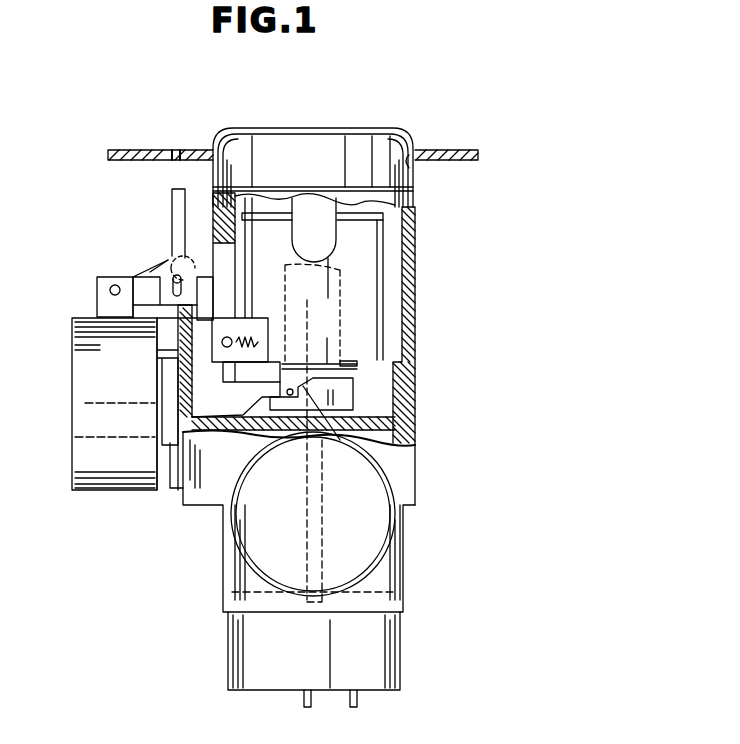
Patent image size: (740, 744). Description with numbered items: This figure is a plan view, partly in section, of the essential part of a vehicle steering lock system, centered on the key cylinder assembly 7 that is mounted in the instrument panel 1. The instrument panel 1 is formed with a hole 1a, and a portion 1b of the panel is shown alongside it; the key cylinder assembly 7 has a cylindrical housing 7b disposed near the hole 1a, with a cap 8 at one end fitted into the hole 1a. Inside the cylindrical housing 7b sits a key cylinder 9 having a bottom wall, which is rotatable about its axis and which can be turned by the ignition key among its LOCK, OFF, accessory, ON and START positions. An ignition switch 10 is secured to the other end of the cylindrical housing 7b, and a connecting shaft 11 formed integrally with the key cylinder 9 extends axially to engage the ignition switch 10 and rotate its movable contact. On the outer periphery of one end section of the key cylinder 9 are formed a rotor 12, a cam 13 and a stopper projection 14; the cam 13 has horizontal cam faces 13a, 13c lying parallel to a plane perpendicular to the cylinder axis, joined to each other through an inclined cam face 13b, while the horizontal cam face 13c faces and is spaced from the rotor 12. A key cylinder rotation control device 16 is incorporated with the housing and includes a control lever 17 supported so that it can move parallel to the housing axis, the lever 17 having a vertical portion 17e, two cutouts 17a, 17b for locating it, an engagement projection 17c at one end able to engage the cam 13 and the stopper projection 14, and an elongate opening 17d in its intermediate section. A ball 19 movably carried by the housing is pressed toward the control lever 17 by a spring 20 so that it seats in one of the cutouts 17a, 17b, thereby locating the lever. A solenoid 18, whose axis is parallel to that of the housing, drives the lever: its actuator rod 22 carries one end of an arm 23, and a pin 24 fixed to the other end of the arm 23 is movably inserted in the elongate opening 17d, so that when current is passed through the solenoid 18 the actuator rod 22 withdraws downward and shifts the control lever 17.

The instrument panel 1 is at (129, 150).
The hole 1a is at (405, 166).
The plate portion 1b is at (177, 150).
The key cylinder assembly 7 is at (424, 310).
The cylindrical housing 7b is at (415, 424).
The cap 8 is at (396, 131).
The key cylinder 9 is at (343, 305).
The ignition switch 10 is at (232, 666).
The connecting shaft 11 is at (322, 517).
The rotor 12 is at (327, 345).
The cam 13 is at (353, 401).
The horizontal cam face 13a is at (292, 396).
The inclined cam face 13b is at (340, 440).
The horizontal cam face 13c is at (357, 368).
The stopper projection 14 is at (282, 368).
The key cylinder rotation control device 16 is at (138, 240).
The control lever 17 is at (200, 340).
The cutout 17a is at (160, 351).
The cutout 17b is at (236, 399).
The engagement projection 17c is at (232, 433).
The elongate opening 17d is at (174, 291).
The armature upright 17e is at (172, 195).
The solenoid 18 is at (72, 404).
The ball 19 is at (258, 338).
The spring 20 is at (262, 352).
The actuator rod 22 is at (97, 293).
The arm 23 is at (155, 270).
The pin 24 is at (172, 262).